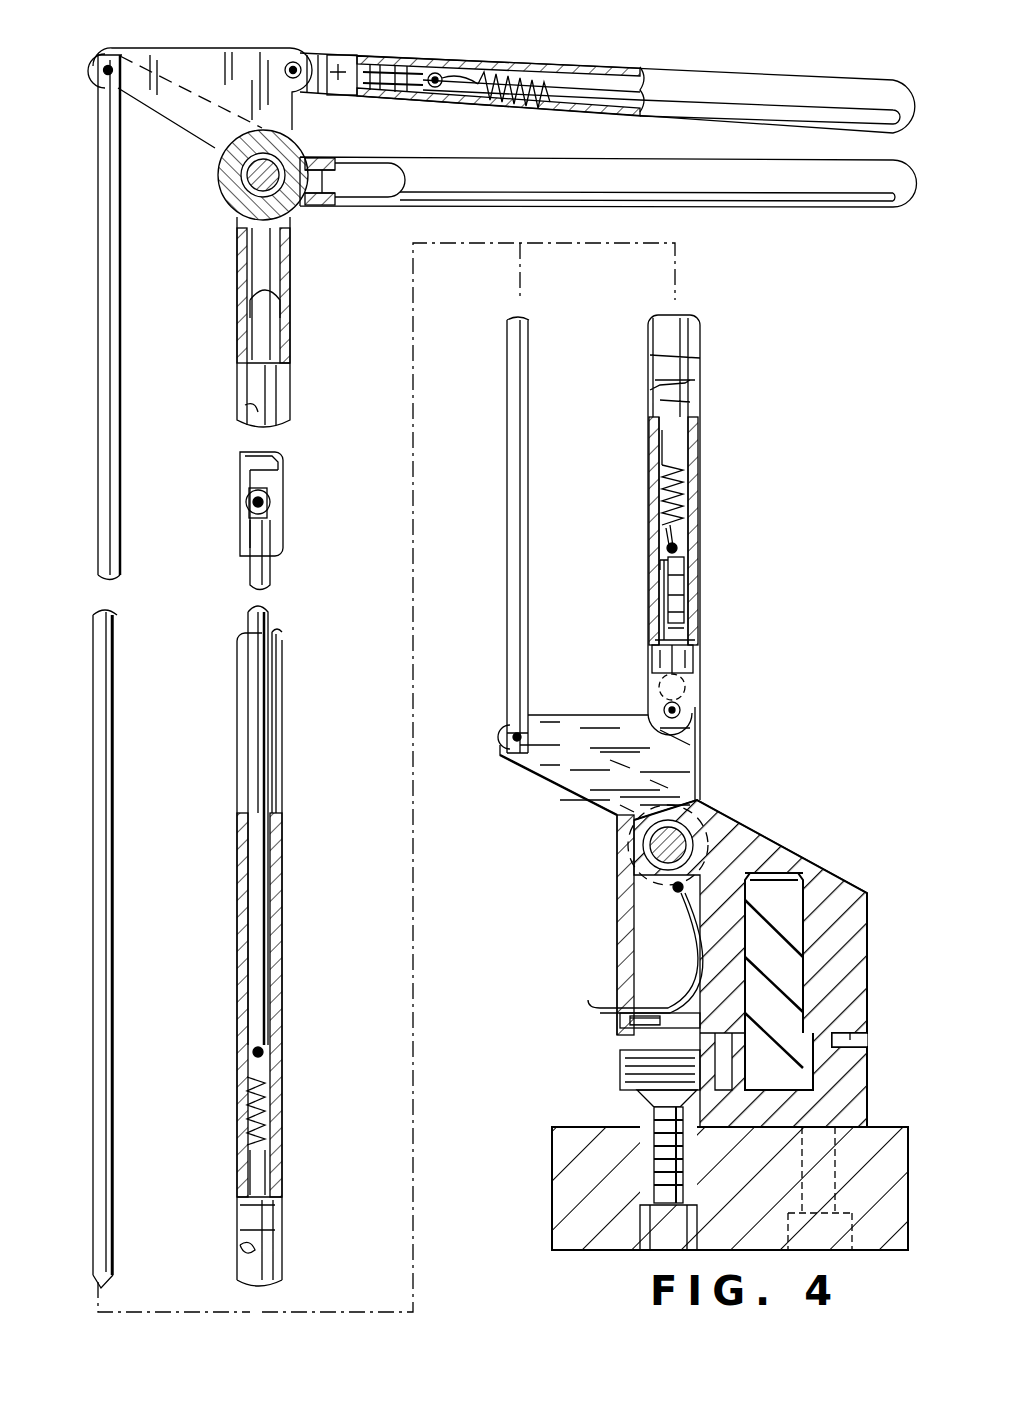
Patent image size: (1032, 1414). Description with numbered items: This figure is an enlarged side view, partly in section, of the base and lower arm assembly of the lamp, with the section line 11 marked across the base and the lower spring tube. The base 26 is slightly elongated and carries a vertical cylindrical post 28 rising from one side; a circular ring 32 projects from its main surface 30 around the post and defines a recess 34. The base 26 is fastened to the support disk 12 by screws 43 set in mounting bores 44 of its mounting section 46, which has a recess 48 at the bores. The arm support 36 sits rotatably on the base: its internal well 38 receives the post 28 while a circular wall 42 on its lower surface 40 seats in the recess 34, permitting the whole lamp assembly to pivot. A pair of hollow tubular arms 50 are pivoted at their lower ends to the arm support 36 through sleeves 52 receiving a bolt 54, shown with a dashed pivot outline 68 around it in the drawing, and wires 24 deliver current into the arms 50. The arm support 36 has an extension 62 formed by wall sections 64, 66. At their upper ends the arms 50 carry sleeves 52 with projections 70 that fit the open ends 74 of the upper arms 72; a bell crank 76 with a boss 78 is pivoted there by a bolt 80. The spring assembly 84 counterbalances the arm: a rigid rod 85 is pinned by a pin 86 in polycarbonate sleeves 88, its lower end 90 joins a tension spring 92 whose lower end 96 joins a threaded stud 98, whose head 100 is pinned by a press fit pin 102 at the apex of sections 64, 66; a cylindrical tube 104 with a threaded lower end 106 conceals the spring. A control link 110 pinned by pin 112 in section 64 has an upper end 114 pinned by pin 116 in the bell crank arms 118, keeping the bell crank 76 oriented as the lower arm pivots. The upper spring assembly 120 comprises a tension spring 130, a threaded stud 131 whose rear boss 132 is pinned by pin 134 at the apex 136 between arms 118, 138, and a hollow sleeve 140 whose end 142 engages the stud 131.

The section line 11- 11 is at (680, 657).
The support disk 12 is at (893, 1253).
The wire 24 is at (645, 955).
The base 26 is at (866, 1112).
The vertical cylindrical post 28 is at (860, 950).
The main surface 30 is at (863, 1040).
The circular ring 32 is at (858, 1020).
The recess 34 is at (835, 1078).
The arm support 36 is at (813, 860).
The internal well or recess 38 is at (790, 940).
The lower surface 40 is at (627, 1027).
The circular wall or ring 42 is at (733, 1058).
The screws 43 is at (653, 1160).
The mounting bores 44 is at (652, 1110).
The mounting section 46 is at (640, 1095).
The recess 48 is at (620, 1060).
The hollow tubular arms 50 is at (293, 353).
The sleeve or boss 52 is at (240, 322).
The bolt 54 is at (700, 815).
The extension 62 is at (700, 748).
The section 64 is at (560, 715).
The section 66 is at (692, 775).
The pivot bore 68 is at (722, 825).
The projections 70 is at (275, 280).
The upper arms 72 is at (732, 183).
The ends 74 is at (322, 215).
The bell crank 76 is at (248, 50).
The sleeve or boss 78 is at (400, 152).
The bolt 80 is at (292, 212).
The spring assembly 84 is at (712, 482).
The rod 85 is at (278, 567).
The pin 86 is at (279, 503).
The polycarbonate sleeves 88 is at (280, 490).
The lower end 90 is at (263, 1057).
The tension spring 92 is at (268, 1110).
The lower end 96 is at (683, 512).
The threaded stud 98 is at (693, 598).
The head 100 is at (693, 655).
The press fit pin 102 is at (690, 694).
The cylindrical tube 104 is at (283, 772).
The threaded lower end 106 is at (280, 1213).
The control link 110 is at (512, 620).
The press fit pin 112 is at (506, 752).
The upper end 114 is at (106, 118).
The press fit pin 116 is at (110, 55).
The arms 118 is at (165, 58).
The spring assembly 120 is at (692, 66).
The tension spring 130 is at (604, 78).
The threaded stud 131 is at (450, 62).
The rear boss 132 is at (372, 58).
The press fit pin 134 is at (333, 55).
The apex 136 is at (300, 100).
The arm 138 is at (308, 118).
The hollow sleeve 140 is at (780, 78).
The end 142 is at (470, 62).